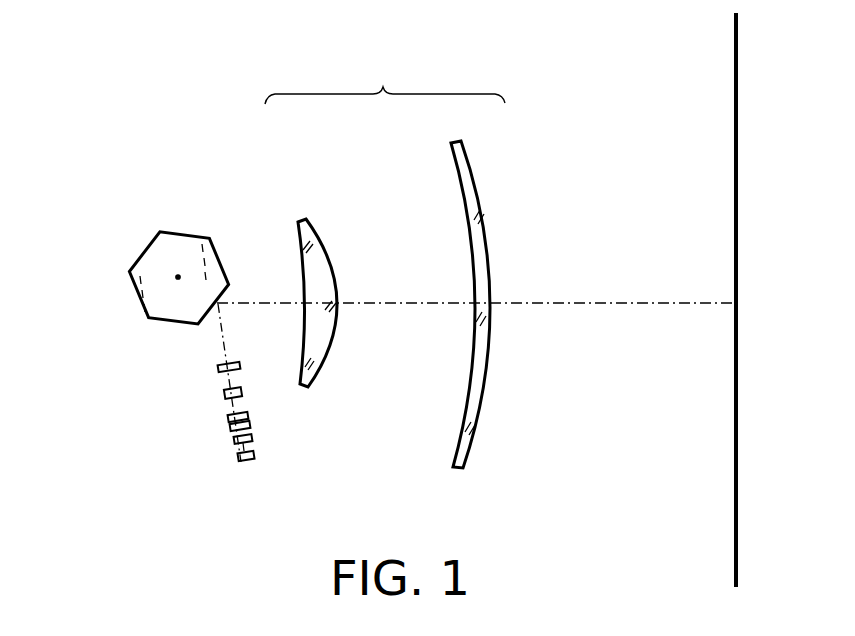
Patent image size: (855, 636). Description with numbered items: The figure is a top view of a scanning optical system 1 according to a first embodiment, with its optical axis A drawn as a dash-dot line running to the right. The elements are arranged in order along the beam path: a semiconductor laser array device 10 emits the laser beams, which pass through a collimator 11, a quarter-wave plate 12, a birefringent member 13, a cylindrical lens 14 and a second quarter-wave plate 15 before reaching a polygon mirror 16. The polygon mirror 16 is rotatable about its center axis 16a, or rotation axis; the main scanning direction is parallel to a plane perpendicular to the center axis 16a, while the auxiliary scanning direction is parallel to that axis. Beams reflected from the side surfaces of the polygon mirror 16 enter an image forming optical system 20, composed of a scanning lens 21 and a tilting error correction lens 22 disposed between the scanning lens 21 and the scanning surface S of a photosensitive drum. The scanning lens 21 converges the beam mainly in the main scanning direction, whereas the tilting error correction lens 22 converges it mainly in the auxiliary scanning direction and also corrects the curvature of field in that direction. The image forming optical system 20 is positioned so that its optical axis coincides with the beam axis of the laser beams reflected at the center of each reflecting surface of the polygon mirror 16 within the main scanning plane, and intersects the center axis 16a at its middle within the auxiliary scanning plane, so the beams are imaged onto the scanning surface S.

The scanning optical system 1 is at (471, 59).
The semiconductor laser array device 10 is at (254, 455).
The collimator 11 is at (236, 444).
The quarter-wave plate 12 is at (250, 425).
The birefringent member 13 is at (228, 417).
The cylindrical lens 14 is at (242, 393).
The quarter-wave plate 15 is at (218, 367).
The polygon mirror 16 is at (180, 236).
The center axis 16a is at (177, 278).
The image forming optical system 20 is at (385, 79).
The scanning lens 21 is at (320, 241).
The tilting error correction lens 22 is at (474, 184).
The optical axis A is at (580, 301).
The scanning surface S is at (735, 493).